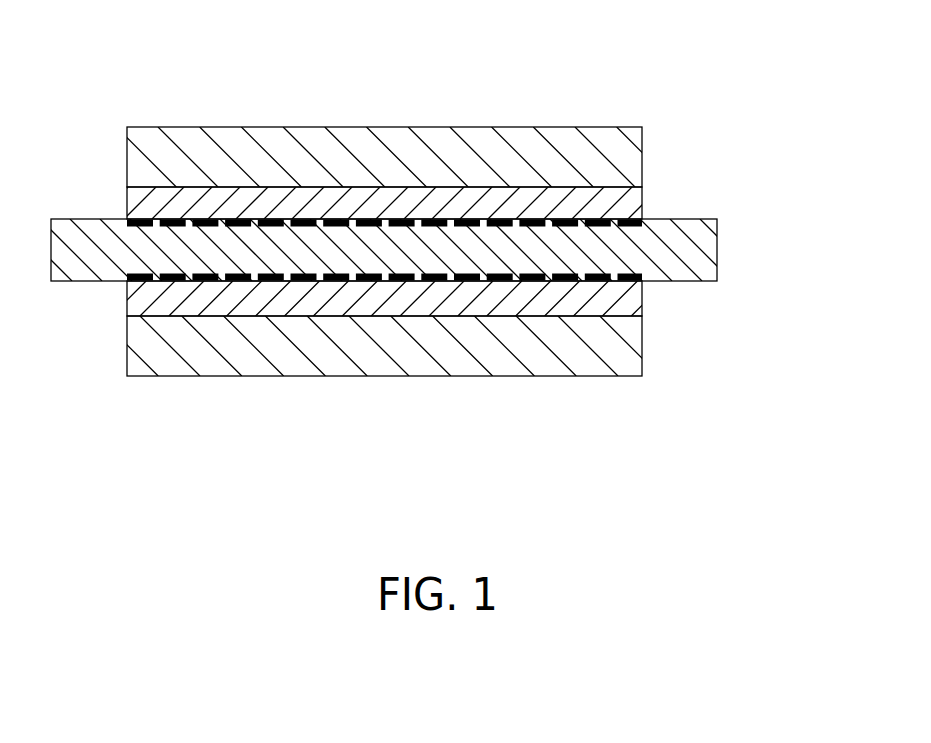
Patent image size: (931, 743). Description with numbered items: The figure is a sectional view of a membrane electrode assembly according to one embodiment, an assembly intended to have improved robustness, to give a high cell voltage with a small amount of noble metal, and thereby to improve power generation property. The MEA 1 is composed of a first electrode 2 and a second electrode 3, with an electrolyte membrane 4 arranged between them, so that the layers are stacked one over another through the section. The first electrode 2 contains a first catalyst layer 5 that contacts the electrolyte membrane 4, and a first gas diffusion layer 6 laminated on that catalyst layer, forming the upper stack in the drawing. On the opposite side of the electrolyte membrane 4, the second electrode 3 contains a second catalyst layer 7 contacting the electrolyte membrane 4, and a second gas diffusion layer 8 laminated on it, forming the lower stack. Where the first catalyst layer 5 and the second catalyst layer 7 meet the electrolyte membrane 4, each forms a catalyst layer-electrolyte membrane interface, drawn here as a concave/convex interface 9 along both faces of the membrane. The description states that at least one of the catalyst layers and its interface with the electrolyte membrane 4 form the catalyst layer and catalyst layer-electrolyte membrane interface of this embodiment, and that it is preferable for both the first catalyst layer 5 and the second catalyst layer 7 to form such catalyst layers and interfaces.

The membrane electrode assembly 1 is at (411, 204).
The first electrode 2 is at (432, 173).
The second electrode 3 is at (412, 328).
The electrolyte membrane 4 is at (695, 248).
The first catalyst layer 5 is at (622, 202).
The first gas diffusion layer 6 is at (622, 148).
The second catalyst layer 7 is at (622, 303).
The second gas diffusion layer 8 is at (622, 357).
The concave/convex interface 9 is at (468, 154).